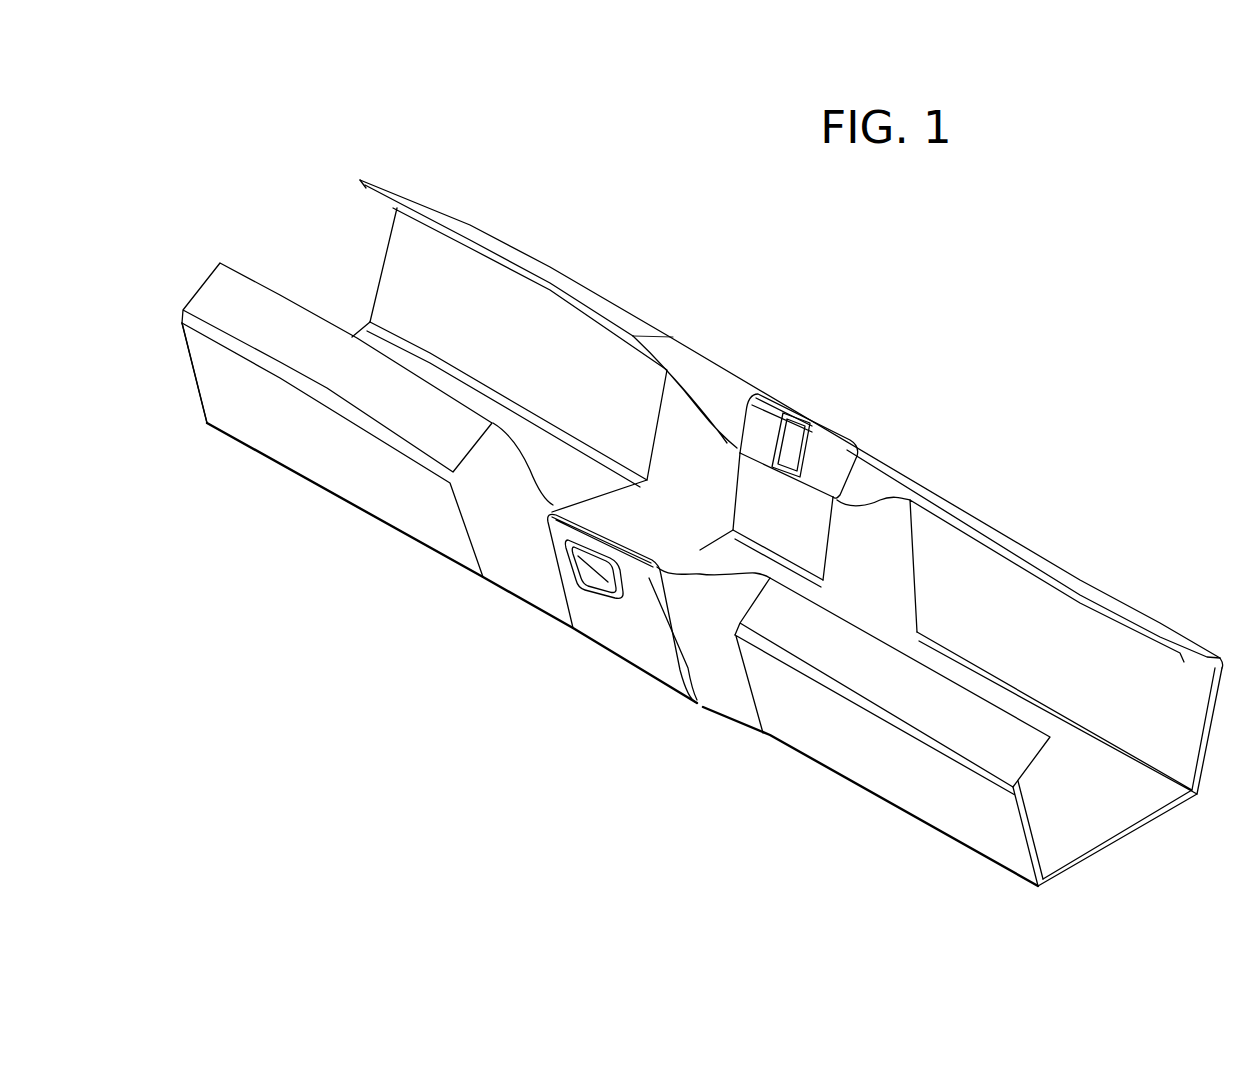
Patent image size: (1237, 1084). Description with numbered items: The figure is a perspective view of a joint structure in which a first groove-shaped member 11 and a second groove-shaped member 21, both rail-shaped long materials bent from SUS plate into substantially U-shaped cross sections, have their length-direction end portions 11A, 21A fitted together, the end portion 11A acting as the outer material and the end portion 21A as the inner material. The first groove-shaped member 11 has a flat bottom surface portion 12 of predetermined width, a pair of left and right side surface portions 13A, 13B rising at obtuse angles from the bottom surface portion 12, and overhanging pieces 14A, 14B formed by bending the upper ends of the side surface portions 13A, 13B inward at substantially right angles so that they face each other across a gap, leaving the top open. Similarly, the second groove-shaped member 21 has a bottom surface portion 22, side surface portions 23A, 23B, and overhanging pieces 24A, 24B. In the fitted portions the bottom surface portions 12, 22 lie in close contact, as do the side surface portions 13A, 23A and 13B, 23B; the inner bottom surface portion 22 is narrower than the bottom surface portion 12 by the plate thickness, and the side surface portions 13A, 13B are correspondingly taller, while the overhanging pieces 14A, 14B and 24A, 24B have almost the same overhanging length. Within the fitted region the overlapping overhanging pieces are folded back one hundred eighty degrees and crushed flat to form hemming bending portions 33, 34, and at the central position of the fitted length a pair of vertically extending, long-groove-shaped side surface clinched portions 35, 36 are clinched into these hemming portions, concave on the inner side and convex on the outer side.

The first groove-shaped member 11 is at (360, 537).
The end portion of the first groove-shaped member 11A is at (760, 750).
The bottom surface portion 12 is at (556, 502).
The side surface portion 13A is at (295, 461).
The side surface portion 13B is at (452, 331).
The overhanging piece 14A is at (360, 408).
The overhanging piece 14B is at (550, 277).
The second groove-shaped member 21 is at (830, 772).
The end portion of the second groove-shaped member 21A is at (962, 476).
The bottom surface portion 22 is at (1069, 813).
The side surface portion 23A is at (867, 778).
The side surface portion 23B is at (1038, 666).
The overhanging piece 24A is at (867, 693).
The overhanging piece 24B is at (1048, 566).
The hemming bending portion 33 is at (633, 553).
The hemming bending portion 34 is at (757, 437).
The side surface clinched portion 35 is at (597, 531).
The side surface clinched portion 36 is at (800, 448).